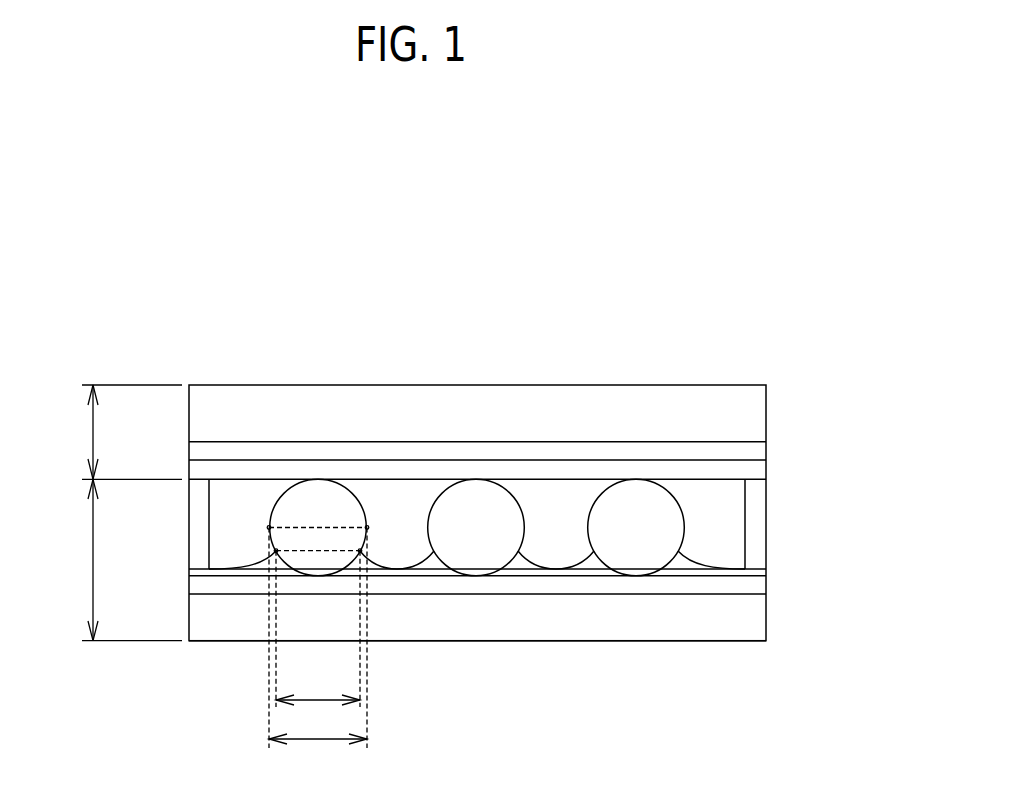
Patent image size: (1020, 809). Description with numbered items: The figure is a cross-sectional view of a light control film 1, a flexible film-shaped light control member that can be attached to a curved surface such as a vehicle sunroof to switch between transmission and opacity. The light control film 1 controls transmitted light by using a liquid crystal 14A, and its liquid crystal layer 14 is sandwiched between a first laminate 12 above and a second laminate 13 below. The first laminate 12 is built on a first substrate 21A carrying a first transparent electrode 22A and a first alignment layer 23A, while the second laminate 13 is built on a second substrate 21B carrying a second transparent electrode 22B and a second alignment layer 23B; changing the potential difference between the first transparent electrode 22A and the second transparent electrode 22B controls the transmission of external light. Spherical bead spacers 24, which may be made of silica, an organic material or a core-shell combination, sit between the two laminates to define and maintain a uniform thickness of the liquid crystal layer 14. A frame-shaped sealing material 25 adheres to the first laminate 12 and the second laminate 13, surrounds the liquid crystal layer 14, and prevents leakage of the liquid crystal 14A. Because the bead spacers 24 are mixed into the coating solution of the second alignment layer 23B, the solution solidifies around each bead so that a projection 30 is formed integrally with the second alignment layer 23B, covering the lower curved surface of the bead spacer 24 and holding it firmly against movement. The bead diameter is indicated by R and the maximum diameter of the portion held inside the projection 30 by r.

The light control film 1 is at (225, 288).
The first laminate 12 is at (78, 432).
The second laminate 13 is at (78, 559).
The liquid crystal layer 14 is at (578, 527).
The liquid crystal 14A is at (636, 527).
The first substrate 21A is at (755, 414).
The second substrate 21B is at (757, 616).
The first transparent electrode 22A is at (757, 451).
The second transparent electrode 22B is at (757, 591).
The first alignment layer 23A is at (757, 470).
The second alignment layer 23B is at (757, 572).
The bead spacer 24 is at (650, 553).
The sealing material 25 is at (757, 505).
The projection 30 is at (436, 562).